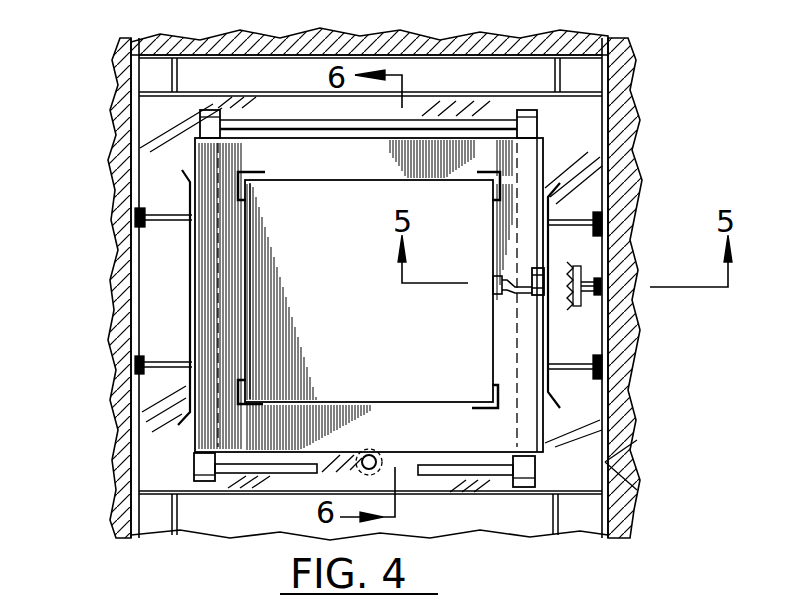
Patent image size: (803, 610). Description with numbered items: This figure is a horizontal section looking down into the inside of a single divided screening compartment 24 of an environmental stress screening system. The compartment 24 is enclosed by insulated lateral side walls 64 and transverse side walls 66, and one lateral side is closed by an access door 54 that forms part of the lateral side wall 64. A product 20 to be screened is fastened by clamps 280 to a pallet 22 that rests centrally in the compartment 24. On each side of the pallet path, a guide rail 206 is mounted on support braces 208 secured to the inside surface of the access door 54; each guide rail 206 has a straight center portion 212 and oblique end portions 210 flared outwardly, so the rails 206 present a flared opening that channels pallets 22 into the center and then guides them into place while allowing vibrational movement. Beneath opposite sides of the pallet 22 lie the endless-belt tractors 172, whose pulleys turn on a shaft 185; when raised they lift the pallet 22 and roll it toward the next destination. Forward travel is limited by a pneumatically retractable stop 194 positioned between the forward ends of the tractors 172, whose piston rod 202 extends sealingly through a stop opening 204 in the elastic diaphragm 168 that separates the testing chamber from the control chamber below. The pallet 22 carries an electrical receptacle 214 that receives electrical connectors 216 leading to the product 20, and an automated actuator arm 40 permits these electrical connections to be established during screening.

The product 20 is at (233, 361).
The pallet 22 is at (184, 317).
The divided screening compartment 24 is at (592, 202).
The automated actuator arm 40 is at (592, 270).
The access door 54 is at (100, 310).
The lateral side wall 64 is at (125, 498).
The transverse side wall 66 is at (505, 55).
The diaphragm 168 is at (578, 165).
The tractor 172 is at (535, 473).
The shaft 185 is at (470, 476).
The retractable stop 194 is at (345, 475).
The piston rod 202 is at (380, 453).
The stop opening 204 is at (373, 450).
The guide rail 206 is at (178, 285).
The support brace 208 is at (163, 210).
The oblique end portion 210 is at (183, 171).
The straight center portion 212 is at (190, 248).
The electrical receptacle 214 is at (532, 275).
The electrical connector 216 is at (515, 283).
The clamp 280 is at (240, 396).